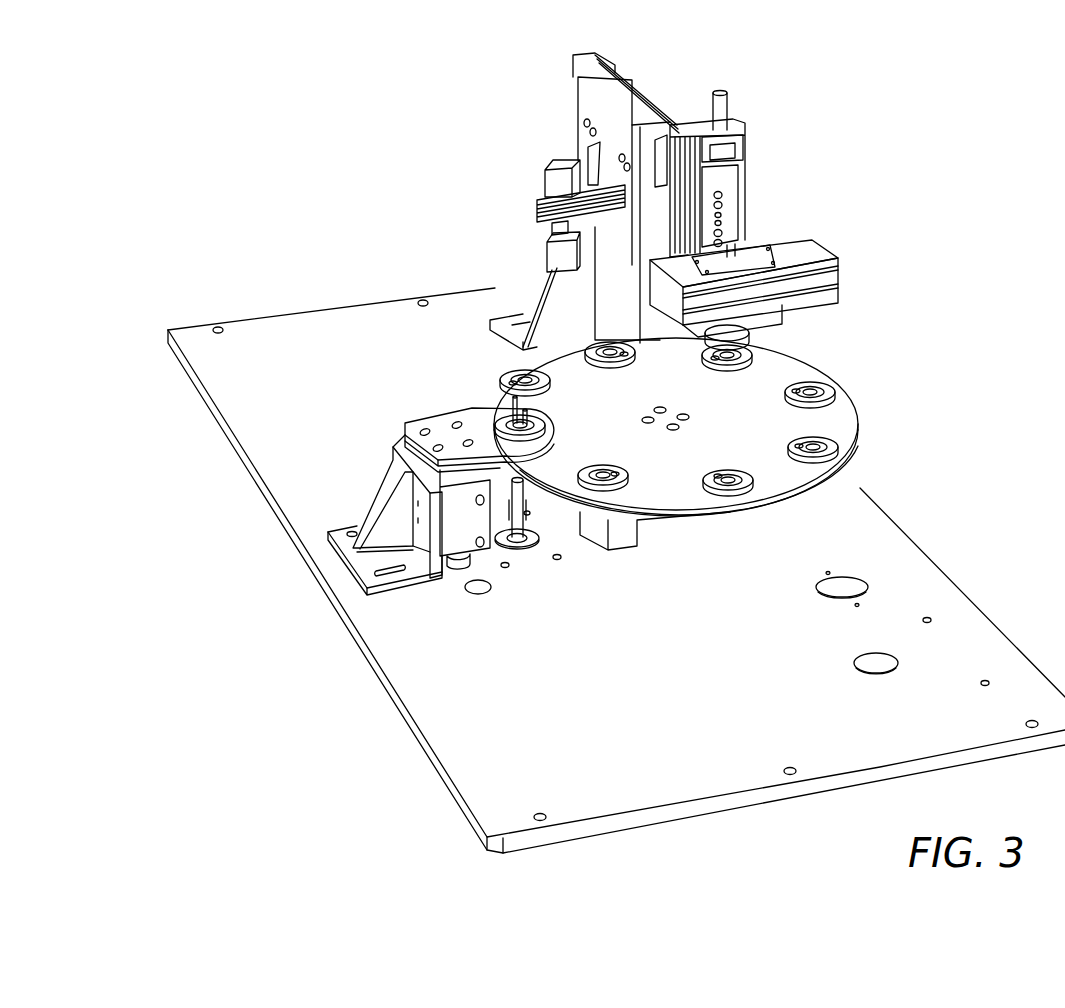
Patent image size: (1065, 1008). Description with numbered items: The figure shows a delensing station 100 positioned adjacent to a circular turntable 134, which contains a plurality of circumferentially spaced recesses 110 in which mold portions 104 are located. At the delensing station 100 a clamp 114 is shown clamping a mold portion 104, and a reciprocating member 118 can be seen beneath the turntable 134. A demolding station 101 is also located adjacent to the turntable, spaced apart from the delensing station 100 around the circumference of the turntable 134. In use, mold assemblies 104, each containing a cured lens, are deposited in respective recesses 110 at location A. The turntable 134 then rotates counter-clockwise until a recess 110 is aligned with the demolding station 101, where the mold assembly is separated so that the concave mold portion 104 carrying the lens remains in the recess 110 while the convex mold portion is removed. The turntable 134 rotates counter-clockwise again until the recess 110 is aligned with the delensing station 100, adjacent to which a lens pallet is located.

The delensing station 100 is at (370, 432).
The demolding station 101 is at (768, 220).
The mold portion 104 is at (508, 371).
The recess 110 is at (610, 480).
The clamp 114 is at (470, 420).
The reciprocating member 118 is at (521, 540).
The circular turntable 134 is at (753, 443).
The location A is at (843, 386).